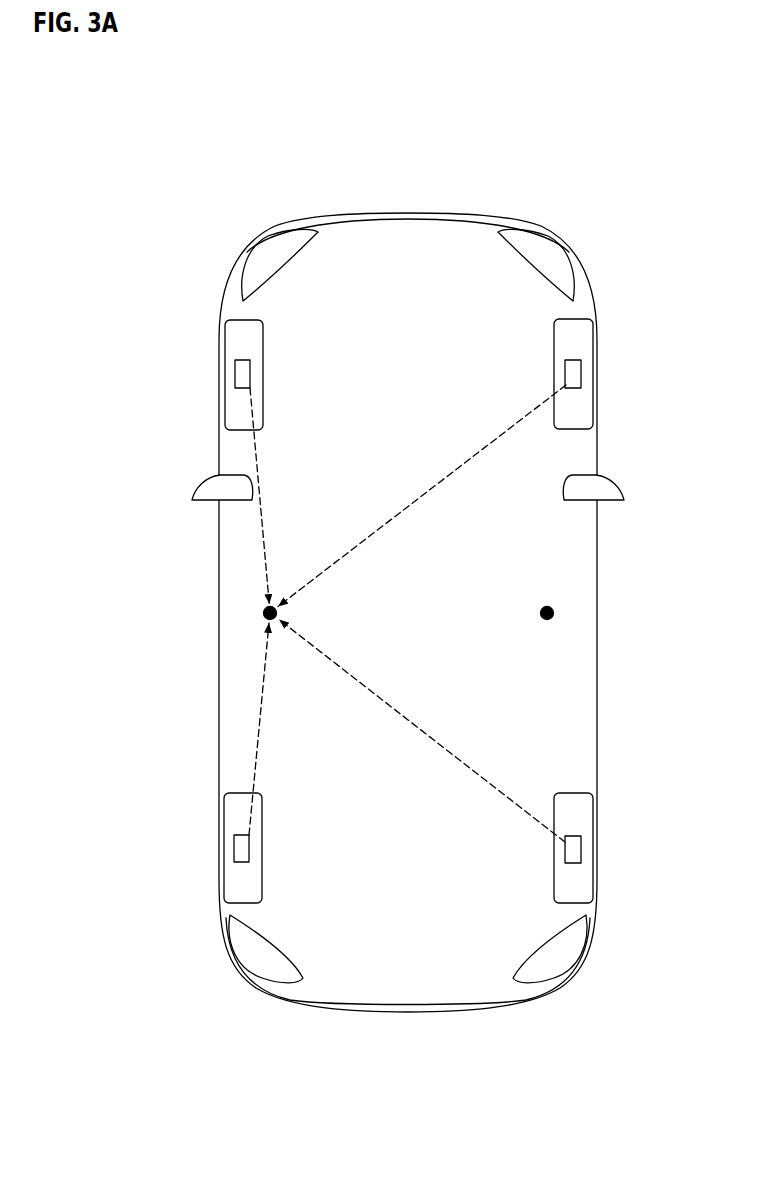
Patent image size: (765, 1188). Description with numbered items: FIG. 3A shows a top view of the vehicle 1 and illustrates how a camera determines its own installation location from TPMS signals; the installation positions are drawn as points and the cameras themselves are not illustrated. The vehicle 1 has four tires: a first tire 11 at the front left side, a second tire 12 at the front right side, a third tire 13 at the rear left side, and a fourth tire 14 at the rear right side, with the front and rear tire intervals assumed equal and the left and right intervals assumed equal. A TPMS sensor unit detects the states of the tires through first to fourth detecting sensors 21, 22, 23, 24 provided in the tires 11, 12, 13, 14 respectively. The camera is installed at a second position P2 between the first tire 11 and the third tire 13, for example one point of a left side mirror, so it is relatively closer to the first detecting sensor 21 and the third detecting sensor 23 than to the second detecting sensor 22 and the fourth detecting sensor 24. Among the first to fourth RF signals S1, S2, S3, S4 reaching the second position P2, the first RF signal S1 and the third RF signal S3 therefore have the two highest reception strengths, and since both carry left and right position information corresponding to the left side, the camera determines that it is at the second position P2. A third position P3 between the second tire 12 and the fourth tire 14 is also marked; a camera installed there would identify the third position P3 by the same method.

The vehicle 1 is at (184, 157).
The first tire 11 is at (218, 343).
The second tire 12 is at (582, 318).
The third tire 13 is at (218, 815).
The fourth tire 14 is at (580, 793).
The first detecting sensor 21 is at (235, 377).
The second detecting sensor 22 is at (582, 370).
The third detecting sensor 23 is at (233, 853).
The fourth detecting sensor 24 is at (582, 845).
The first RF signal S1 is at (265, 489).
The second RF signal S2 is at (433, 477).
The third RF signal S3 is at (260, 750).
The fourth RF signal S4 is at (488, 787).
The second position P2 is at (264, 614).
The third position P3 is at (552, 612).